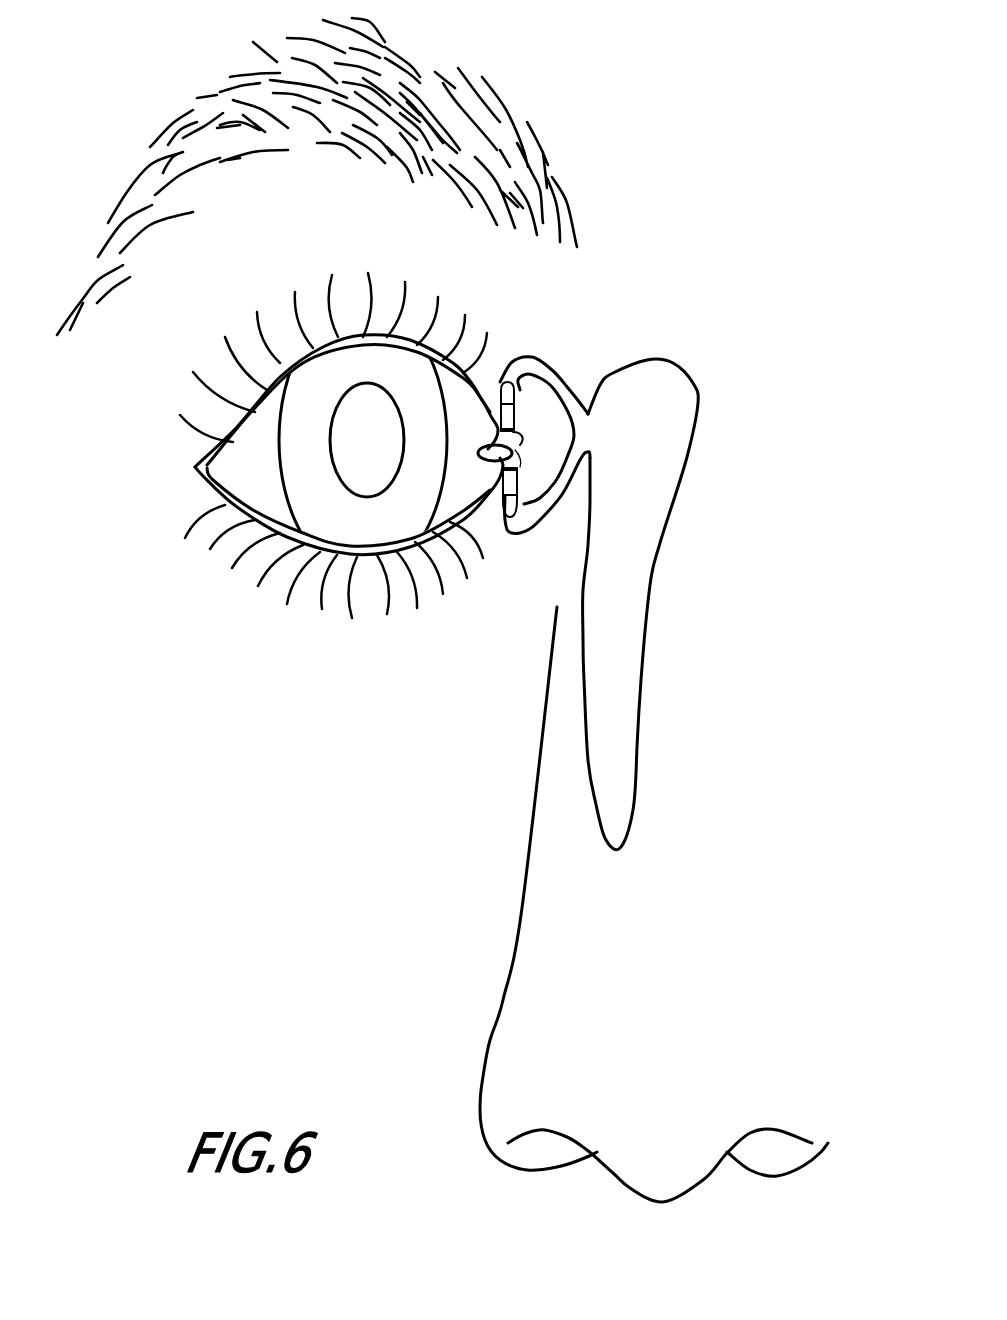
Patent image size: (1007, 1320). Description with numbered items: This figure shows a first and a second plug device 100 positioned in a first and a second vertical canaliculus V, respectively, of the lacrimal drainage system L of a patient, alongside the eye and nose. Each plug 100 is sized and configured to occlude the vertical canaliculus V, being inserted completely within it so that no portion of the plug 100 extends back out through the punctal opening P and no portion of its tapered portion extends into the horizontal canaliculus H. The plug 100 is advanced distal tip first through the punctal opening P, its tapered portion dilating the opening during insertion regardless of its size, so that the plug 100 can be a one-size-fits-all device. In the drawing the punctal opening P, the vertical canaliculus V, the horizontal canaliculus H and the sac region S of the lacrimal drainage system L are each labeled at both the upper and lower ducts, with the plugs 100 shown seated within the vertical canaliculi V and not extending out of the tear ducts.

The plug device 100 is at (527, 388).
The punctal opening P is at (525, 441).
The vertical canaliculus V is at (502, 385).
The horizontal canaliculus H is at (562, 388).
The lacrimal sac S is at (518, 362).
The lacrimal drainage system L is at (745, 341).